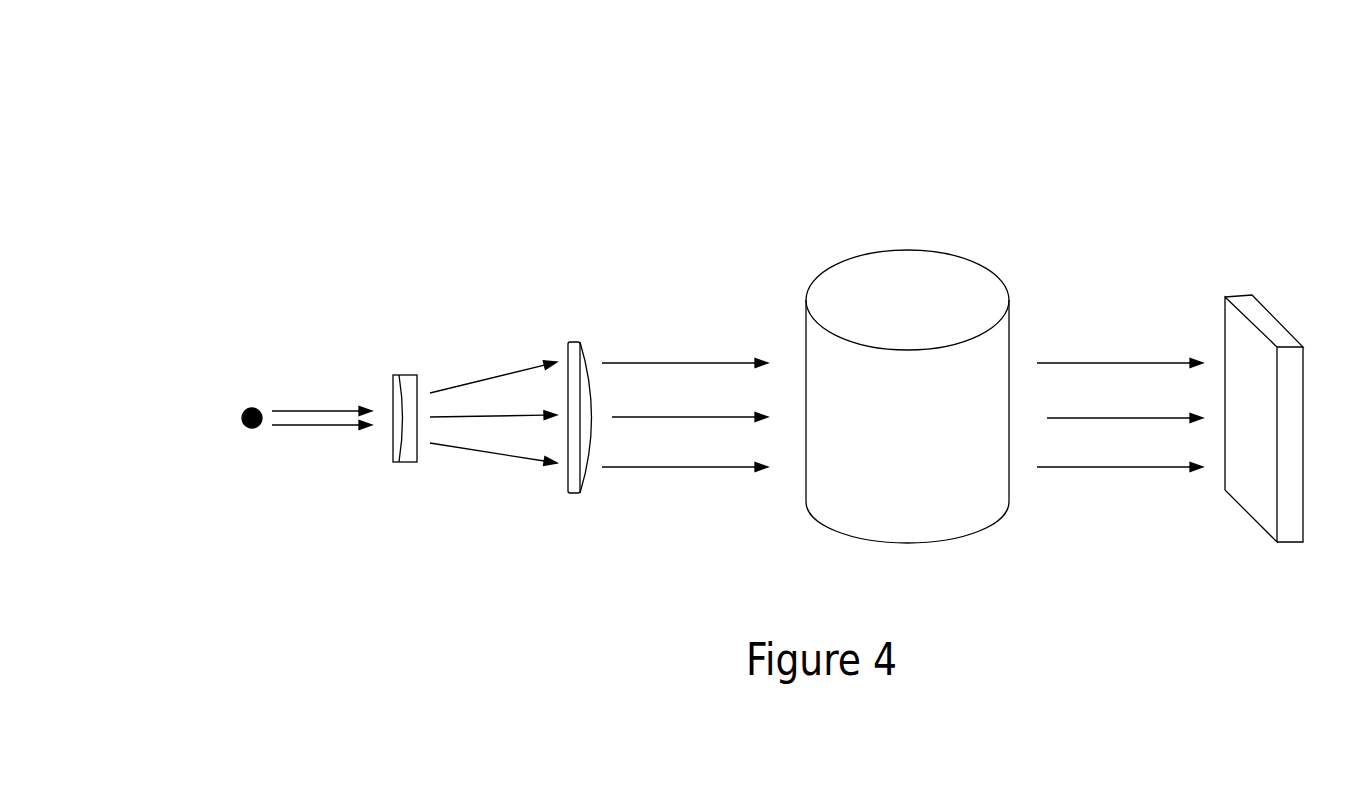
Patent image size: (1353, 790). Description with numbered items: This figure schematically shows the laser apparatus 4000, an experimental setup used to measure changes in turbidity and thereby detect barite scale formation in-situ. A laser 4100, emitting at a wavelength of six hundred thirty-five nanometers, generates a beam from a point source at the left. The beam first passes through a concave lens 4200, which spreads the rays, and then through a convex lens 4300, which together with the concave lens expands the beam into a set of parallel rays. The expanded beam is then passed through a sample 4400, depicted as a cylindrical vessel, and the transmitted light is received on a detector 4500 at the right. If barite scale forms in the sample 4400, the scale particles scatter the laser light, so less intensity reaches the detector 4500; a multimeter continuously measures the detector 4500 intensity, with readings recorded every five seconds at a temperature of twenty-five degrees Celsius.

The laser apparatus 4000 is at (1146, 126).
The laser 4100 is at (253, 406).
The concave lens 4200 is at (404, 374).
The convex lens 4300 is at (573, 341).
The sample 4400 is at (862, 254).
The detector 4500 is at (1236, 292).